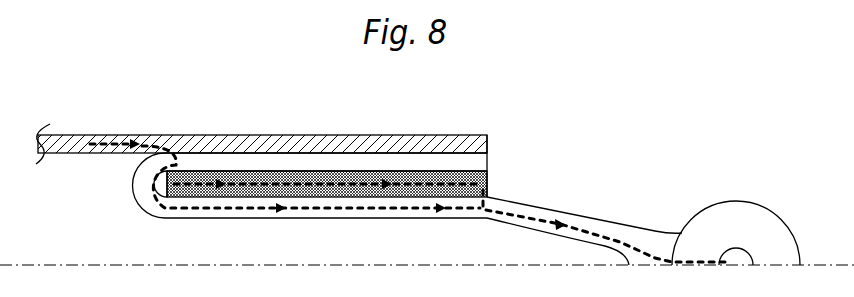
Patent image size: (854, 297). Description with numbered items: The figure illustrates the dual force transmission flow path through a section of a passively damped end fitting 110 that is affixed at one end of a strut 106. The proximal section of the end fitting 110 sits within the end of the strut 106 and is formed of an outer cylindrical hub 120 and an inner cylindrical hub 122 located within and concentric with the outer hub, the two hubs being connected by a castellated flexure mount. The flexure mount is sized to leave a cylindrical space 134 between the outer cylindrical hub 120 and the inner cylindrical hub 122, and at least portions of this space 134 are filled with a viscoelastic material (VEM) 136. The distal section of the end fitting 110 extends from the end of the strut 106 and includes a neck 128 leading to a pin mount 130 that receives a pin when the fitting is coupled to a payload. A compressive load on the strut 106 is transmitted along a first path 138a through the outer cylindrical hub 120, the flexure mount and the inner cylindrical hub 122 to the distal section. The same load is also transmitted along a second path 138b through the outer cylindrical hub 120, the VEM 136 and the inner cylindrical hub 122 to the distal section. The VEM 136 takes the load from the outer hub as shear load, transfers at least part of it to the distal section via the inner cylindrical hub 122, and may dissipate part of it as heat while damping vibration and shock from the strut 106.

The strut 106 is at (85, 143).
The end fitting 110 is at (610, 114).
The outer cylindrical hub 120 is at (250, 163).
The inner cylindrical hub 122 is at (328, 219).
The neck 128 is at (582, 216).
The pin mount 130 is at (767, 208).
The cylindrical space 134 is at (160, 184).
The viscoelastic material (VEM) 136 is at (460, 193).
The first path 138a is at (203, 209).
The second path 138b is at (337, 186).